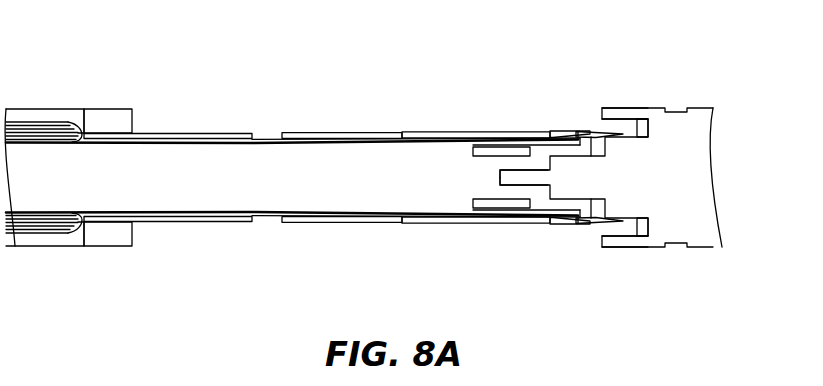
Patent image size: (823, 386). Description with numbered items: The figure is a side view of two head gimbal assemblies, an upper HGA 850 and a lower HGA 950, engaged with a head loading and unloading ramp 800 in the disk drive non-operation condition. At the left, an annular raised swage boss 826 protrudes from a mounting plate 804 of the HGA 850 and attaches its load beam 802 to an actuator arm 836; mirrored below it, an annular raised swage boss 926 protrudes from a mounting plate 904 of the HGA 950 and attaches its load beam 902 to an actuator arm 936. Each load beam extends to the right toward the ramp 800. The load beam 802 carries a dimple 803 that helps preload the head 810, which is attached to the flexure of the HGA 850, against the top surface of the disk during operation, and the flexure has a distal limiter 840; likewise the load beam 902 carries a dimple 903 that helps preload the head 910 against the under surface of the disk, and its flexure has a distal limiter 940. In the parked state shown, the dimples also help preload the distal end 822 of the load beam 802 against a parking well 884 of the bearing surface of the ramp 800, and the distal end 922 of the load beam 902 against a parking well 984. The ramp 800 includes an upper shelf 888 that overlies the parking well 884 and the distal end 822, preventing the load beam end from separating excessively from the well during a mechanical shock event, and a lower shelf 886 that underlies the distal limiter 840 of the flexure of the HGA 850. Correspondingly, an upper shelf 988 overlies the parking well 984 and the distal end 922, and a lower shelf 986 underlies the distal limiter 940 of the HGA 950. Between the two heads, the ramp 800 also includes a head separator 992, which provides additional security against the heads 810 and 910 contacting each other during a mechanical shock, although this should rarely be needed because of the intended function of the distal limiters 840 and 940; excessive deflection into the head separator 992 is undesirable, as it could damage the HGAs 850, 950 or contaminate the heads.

The head loading and unloading ramp 800 is at (698, 203).
The load beam 802 is at (330, 137).
The dimple 803 is at (500, 139).
The mounting plate 804 is at (158, 138).
The head 810 is at (484, 157).
The distal end 822 is at (592, 132).
The annular raised swage boss 826 is at (65, 108).
The actuator arm 836 is at (110, 108).
The distal limiter 840 is at (558, 131).
The head gimbal assembly 850 is at (283, 134).
The parking well 884 is at (638, 135).
The lower shelf 886 is at (590, 132).
The upper shelf 888 is at (615, 113).
The load beam 902 is at (360, 222).
The dimple 903 is at (503, 216).
The mounting plate 904 is at (160, 222).
The head 910 is at (484, 198).
The distal end 922 is at (600, 224).
The annular raised swage boss 926 is at (72, 247).
The actuator arm 936 is at (103, 247).
The distal limiter 940 is at (557, 224).
The head gimbal assembly 950 is at (297, 222).
The parking well 984 is at (637, 220).
The lower shelf 986 is at (585, 225).
The upper shelf 988 is at (610, 243).
The head separator 992 is at (498, 175).